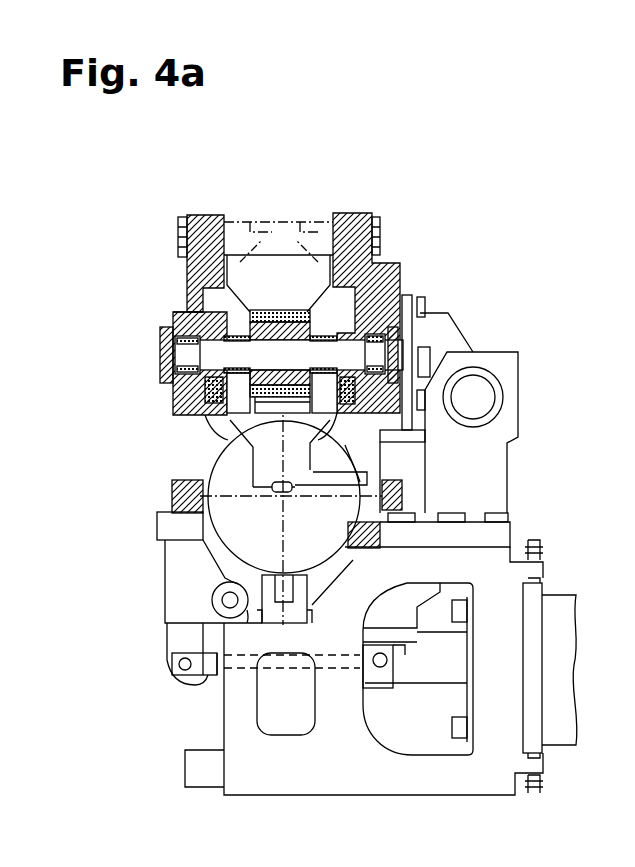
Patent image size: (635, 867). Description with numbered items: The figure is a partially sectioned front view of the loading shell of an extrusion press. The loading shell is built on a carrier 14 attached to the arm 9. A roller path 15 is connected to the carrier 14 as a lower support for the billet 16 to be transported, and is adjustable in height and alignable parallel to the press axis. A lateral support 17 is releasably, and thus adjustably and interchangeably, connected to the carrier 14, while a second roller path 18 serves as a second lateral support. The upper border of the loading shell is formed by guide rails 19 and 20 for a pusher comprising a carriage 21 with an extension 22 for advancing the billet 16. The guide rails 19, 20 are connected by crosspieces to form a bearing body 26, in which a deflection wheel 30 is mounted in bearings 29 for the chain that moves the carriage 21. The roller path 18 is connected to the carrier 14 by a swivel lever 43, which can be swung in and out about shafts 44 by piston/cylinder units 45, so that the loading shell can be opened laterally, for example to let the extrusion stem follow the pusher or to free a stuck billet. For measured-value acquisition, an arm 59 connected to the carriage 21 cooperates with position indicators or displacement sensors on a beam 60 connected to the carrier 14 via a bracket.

The arm 9 is at (567, 667).
The carrier 14 is at (330, 758).
The roller path 15 is at (283, 575).
The billet 16 is at (228, 471).
The lateral support 17 is at (353, 537).
The roller path 18 is at (172, 486).
The guide rail 19 is at (208, 316).
The guide rail 20 is at (355, 298).
The carriage 21 is at (327, 414).
The extension 22 is at (272, 468).
The bearing body 26 is at (302, 186).
The bearings 29 is at (162, 336).
The deflection wheel 30 is at (272, 310).
The swivel lever 43 is at (176, 608).
The shafts 44 is at (214, 596).
The piston/cylinder units 45 is at (427, 662).
The arm 59 is at (370, 457).
The beam 60 is at (403, 496).